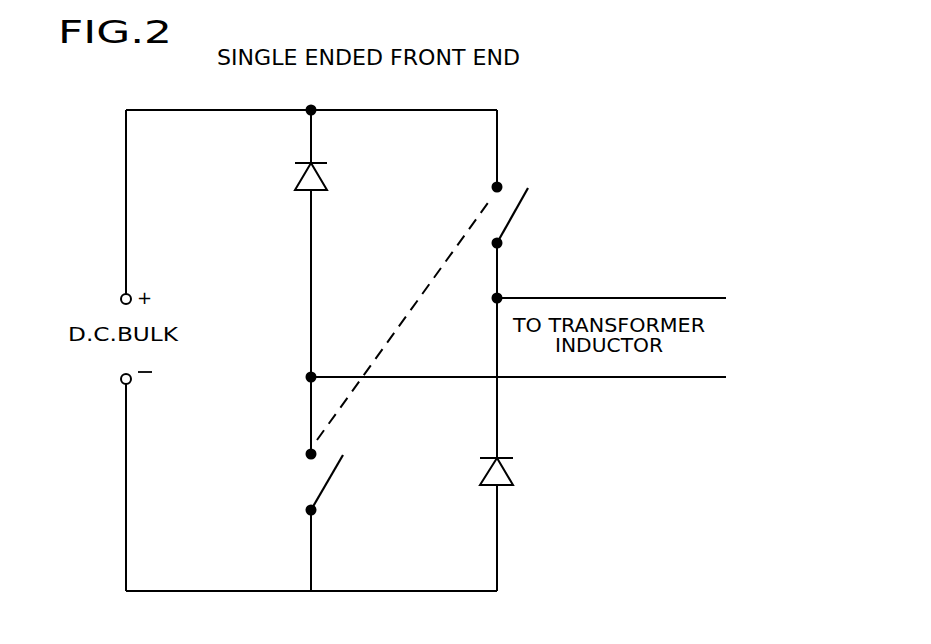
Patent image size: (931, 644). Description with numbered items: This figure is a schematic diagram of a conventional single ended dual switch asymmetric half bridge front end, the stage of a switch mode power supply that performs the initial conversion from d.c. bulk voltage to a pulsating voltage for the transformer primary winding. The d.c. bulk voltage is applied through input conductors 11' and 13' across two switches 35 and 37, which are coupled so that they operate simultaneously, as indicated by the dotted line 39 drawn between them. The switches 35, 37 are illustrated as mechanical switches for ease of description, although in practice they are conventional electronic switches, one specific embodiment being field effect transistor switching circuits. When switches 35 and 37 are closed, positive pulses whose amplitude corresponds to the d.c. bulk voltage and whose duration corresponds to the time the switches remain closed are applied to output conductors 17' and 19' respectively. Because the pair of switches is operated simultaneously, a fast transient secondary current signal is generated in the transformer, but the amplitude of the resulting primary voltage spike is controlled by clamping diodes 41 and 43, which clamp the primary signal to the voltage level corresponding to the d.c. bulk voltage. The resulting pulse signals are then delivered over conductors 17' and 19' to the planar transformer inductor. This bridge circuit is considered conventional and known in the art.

The conductor 11' is at (74, 207).
The conductor 13' is at (72, 482).
The output conductor 17' is at (611, 265).
The output conductor 19' is at (518, 410).
The switch 35 is at (520, 210).
The switch 37 is at (336, 470).
The dotted line 39 is at (456, 252).
The clamping diode 41 is at (300, 180).
The clamping diode 43 is at (503, 468).